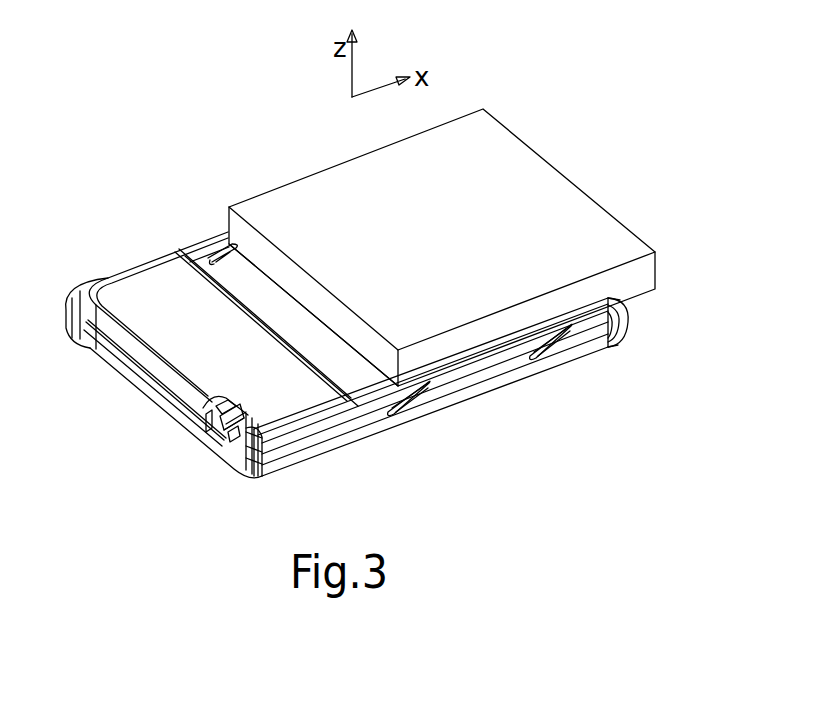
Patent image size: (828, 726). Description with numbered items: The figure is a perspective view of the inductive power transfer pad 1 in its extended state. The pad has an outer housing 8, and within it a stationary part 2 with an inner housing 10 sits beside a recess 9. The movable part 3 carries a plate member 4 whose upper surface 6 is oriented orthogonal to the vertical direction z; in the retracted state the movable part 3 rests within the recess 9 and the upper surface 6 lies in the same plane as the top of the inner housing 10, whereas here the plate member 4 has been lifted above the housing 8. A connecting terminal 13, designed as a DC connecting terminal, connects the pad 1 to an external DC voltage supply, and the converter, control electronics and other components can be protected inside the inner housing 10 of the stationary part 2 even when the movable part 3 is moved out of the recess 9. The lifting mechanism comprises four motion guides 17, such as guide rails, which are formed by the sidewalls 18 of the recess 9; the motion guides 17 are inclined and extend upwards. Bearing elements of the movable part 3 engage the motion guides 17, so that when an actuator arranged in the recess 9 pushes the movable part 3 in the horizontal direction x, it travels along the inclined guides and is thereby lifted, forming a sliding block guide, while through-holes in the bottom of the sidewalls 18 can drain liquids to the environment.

The inductive power transfer pad 1 is at (575, 363).
The stationary part 2 is at (158, 287).
The movable part 3 is at (555, 200).
The plate member 4 is at (530, 178).
The upper surface of the plate member 6 is at (478, 157).
The housing 8 is at (158, 386).
The recess 9 is at (357, 380).
The inner housing 10 is at (125, 288).
The connecting terminal 13 is at (216, 441).
The motion guides 17 is at (541, 352).
The sidewalls 18 is at (596, 330).